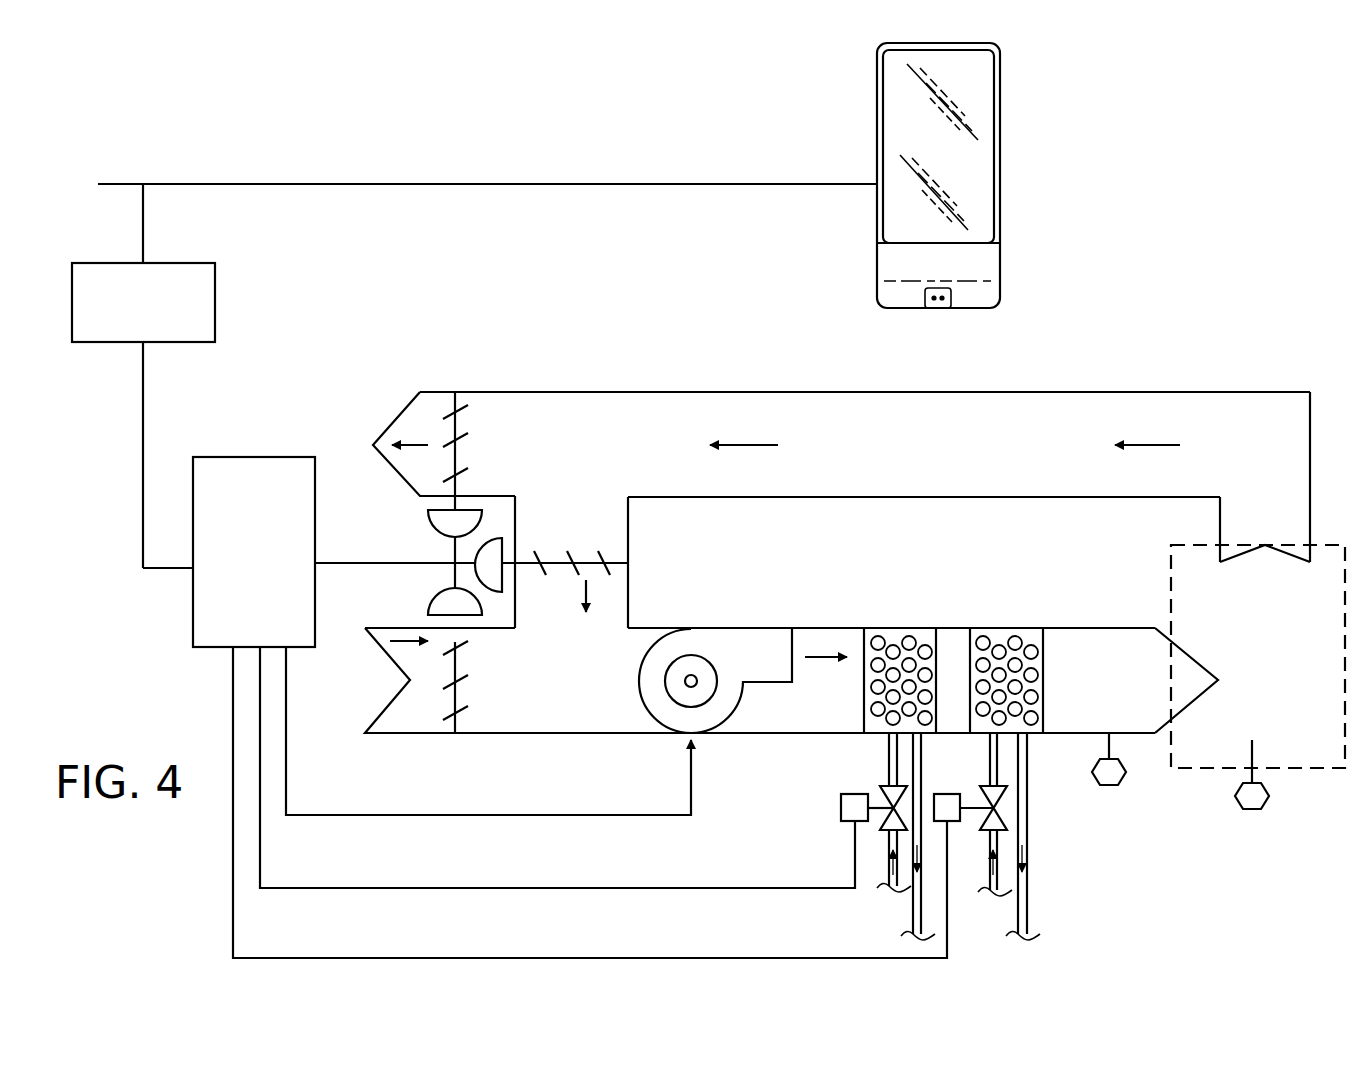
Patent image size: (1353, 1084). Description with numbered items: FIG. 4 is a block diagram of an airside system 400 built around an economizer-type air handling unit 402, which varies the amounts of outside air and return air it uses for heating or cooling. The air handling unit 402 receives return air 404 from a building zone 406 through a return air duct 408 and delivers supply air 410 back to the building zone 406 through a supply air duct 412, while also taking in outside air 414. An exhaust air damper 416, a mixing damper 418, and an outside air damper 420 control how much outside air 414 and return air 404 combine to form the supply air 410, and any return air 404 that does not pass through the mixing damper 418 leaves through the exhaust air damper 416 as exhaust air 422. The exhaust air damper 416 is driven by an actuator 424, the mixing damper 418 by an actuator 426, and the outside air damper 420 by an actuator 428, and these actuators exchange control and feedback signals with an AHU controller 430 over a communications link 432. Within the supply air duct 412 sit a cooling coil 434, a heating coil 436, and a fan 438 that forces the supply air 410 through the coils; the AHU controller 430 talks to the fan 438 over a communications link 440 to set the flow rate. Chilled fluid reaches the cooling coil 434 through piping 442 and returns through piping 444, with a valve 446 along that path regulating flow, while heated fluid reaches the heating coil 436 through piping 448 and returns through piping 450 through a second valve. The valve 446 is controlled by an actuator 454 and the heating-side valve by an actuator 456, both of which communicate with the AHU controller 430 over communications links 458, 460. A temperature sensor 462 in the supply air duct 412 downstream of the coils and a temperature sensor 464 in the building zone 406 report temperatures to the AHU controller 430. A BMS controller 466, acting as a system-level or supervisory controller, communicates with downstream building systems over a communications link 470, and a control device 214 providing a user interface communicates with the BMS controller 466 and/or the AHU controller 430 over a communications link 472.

The airside system 400 is at (492, 154).
The air handling unit 402 is at (1153, 282).
The return air 404 is at (1274, 465).
The building zone 406 is at (1320, 752).
The return air duct 408 is at (1172, 392).
The supply air 410 is at (1130, 647).
The supply air duct 412 is at (1078, 628).
The outside air 414 is at (350, 715).
The exhaust air damper 416 is at (461, 430).
The mixing damper 418 is at (618, 560).
The outside air damper 420 is at (457, 697).
The exhaust air 422 is at (352, 390).
The actuator 424 is at (473, 518).
The actuator 426 is at (501, 546).
The actuator 428 is at (437, 609).
The AHU controller 430 is at (227, 465).
The communications link 432 is at (365, 560).
The cooling coil 434 is at (897, 630).
The heating coil 436 is at (1003, 630).
The fan 438 is at (734, 700).
The communications link 440 is at (508, 815).
The piping 442 is at (889, 758).
The piping 444 is at (913, 910).
The valve 446 is at (884, 792).
The piping 448 is at (992, 758).
The piping 450 is at (1027, 903).
The actuator 454 is at (846, 818).
The actuator 456 is at (953, 818).
The communications link 458 is at (600, 888).
The communications link 460 is at (652, 958).
The temperature sensor 462 is at (1105, 790).
The temperature sensor 464 is at (1250, 813).
The BMS controller 466 is at (206, 304).
The communications link 470 is at (142, 500).
The communications link 472 is at (252, 184).
The control device 214 is at (977, 190).